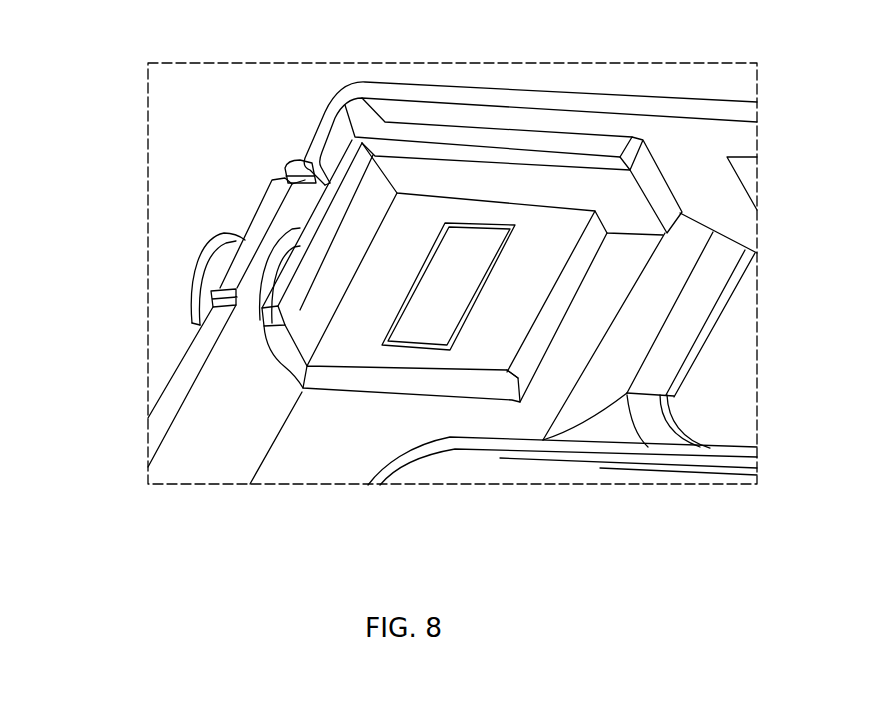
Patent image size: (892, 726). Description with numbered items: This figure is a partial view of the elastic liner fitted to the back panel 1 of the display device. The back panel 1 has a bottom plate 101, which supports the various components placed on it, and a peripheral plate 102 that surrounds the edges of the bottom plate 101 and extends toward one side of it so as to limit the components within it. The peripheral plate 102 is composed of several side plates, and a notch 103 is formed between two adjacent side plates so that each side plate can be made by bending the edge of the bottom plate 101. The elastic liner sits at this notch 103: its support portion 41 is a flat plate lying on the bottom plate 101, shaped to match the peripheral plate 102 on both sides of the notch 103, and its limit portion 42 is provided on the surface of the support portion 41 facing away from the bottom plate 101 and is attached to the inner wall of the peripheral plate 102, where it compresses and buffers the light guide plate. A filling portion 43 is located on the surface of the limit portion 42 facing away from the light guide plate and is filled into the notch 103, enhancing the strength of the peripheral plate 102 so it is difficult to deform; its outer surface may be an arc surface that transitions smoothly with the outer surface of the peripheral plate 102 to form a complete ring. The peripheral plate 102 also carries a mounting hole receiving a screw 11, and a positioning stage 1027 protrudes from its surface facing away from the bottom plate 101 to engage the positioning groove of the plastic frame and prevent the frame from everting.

The back panel 1 is at (170, 546).
The screw 11 is at (200, 263).
The support portion 41 is at (535, 220).
The limit portion 42 is at (498, 140).
The filling portion 43 is at (397, 87).
The bottom plate 101 is at (325, 460).
The peripheral plate 102 is at (208, 462).
The notch 103 is at (300, 160).
The positioning stage 1027 is at (263, 220).